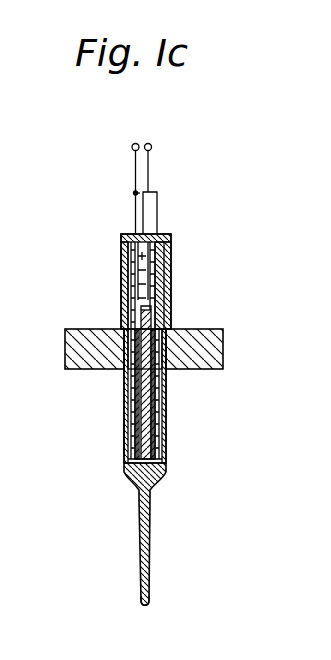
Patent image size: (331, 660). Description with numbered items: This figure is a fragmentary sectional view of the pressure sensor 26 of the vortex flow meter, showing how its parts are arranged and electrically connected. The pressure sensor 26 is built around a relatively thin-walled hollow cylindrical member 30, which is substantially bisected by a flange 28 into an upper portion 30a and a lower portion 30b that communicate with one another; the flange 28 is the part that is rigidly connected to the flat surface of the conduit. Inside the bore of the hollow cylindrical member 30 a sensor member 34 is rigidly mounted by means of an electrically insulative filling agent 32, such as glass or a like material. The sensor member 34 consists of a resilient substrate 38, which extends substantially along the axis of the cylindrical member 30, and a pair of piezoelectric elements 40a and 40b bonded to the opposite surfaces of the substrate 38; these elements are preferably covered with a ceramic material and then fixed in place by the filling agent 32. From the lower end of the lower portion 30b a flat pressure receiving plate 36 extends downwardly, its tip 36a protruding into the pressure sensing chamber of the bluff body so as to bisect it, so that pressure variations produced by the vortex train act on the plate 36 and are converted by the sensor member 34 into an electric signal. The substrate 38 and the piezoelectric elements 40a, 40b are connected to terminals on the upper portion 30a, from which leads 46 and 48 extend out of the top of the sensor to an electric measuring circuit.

The pressure sensor 26 is at (182, 230).
The flange 28 is at (86, 332).
The hollow cylindrical member 30 is at (175, 298).
The upper portion 30a is at (121, 272).
The lower portion 30b is at (124, 441).
The electrically insulative filling agent 32 is at (161, 279).
The sensor member 34 is at (157, 362).
The flat pressure receiving plate 36 is at (149, 539).
The pressure receiving plate tip 36a is at (149, 601).
The resilient substrate 38 is at (148, 316).
The piezoelectric element 40a is at (135, 413).
The piezoelectric element 40b is at (156, 421).
The lead 46 is at (151, 166).
The lead 48 is at (134, 166).